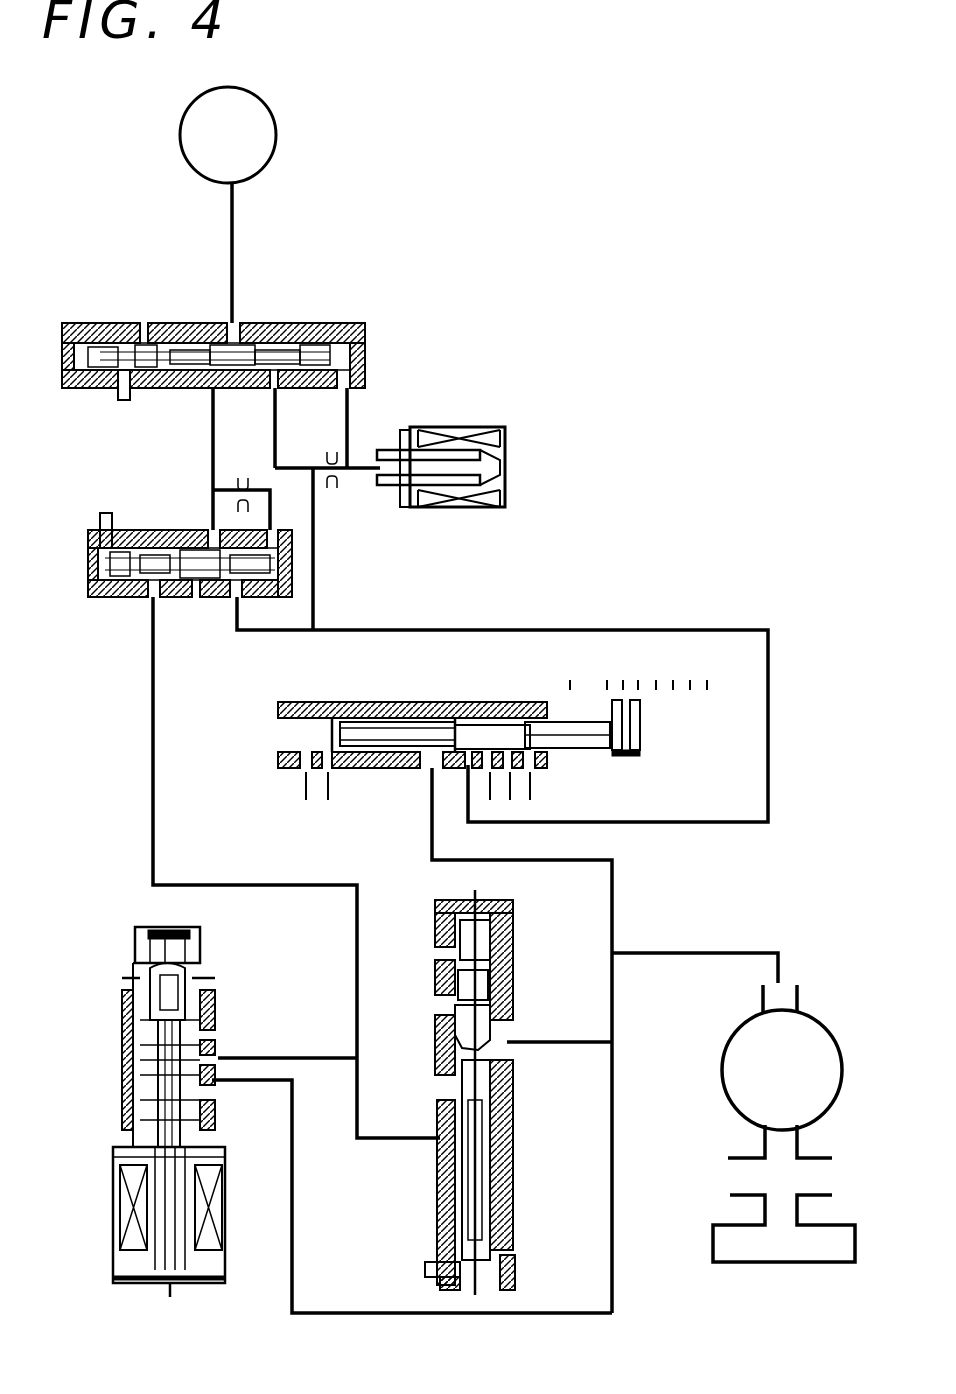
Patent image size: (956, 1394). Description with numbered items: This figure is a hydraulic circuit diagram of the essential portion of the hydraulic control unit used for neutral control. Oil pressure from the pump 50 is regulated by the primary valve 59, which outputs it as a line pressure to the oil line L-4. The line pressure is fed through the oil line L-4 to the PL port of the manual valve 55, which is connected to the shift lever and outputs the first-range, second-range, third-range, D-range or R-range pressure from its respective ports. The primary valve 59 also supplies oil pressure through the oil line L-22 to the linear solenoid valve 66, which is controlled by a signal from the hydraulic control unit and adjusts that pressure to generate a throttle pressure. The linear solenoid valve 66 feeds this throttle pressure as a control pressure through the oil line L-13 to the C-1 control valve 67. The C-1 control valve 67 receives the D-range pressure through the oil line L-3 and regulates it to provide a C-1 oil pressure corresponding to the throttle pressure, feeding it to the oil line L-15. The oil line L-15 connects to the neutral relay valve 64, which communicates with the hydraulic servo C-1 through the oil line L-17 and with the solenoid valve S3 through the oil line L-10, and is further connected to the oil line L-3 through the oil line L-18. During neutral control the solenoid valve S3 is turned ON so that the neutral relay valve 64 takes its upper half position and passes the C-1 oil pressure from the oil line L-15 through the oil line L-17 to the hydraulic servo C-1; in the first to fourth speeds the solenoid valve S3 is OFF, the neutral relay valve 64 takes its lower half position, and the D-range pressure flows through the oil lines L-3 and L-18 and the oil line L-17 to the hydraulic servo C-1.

The hydraulic servo C-1 is at (228, 135).
The oil line L-17 is at (232, 237).
The neutral relay valve 64 is at (340, 321).
The oil line L-10 is at (352, 400).
The solenoid valve S3 is at (460, 447).
The oil line L-15 is at (210, 432).
The C-1 control valve 67 is at (88, 540).
The oil line L-18 is at (318, 586).
The oil line L-3 is at (615, 632).
The manual valve 55 is at (415, 700).
The oil line L-13 is at (156, 830).
The oil line L-4 is at (614, 882).
The oil line L-22 is at (296, 1228).
The linear solenoid valve 66 is at (215, 980).
The primary valve 59 is at (515, 960).
The pump 50 is at (787, 983).